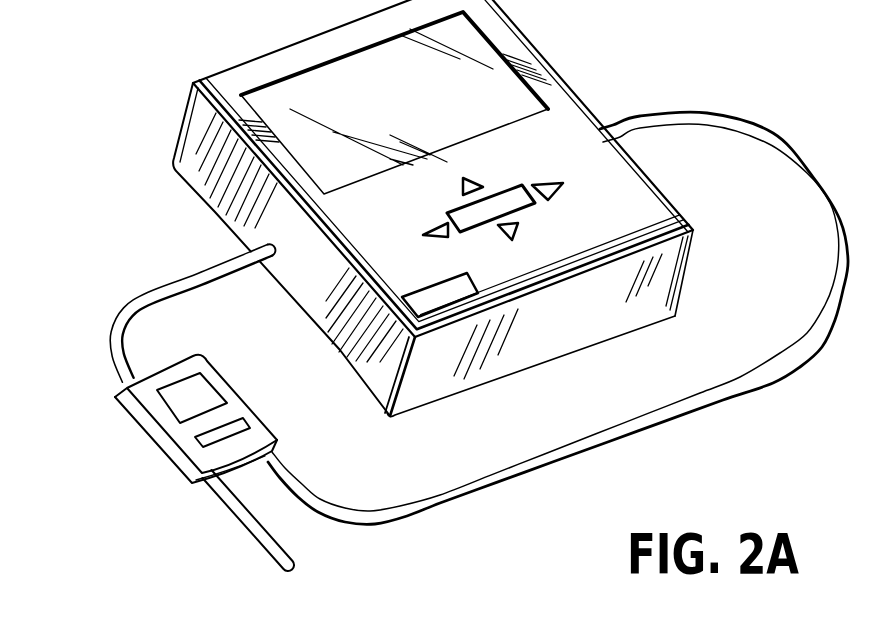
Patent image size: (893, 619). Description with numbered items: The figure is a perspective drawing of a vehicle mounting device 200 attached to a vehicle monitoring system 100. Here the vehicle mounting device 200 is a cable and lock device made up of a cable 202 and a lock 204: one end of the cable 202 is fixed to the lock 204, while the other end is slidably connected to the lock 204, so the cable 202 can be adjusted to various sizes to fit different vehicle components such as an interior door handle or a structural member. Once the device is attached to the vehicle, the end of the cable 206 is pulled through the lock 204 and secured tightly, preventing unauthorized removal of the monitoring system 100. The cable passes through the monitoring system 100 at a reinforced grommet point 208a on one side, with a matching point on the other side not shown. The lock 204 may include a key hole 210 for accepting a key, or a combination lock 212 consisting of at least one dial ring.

The vehicle monitoring system 100 is at (551, 62).
The vehicle mounting device 200 is at (139, 522).
The cable 202 is at (545, 471).
The lock 204 is at (157, 444).
The end of the cable 206 is at (257, 538).
The reinforced grommet point 208a is at (256, 246).
The key hole 210 is at (207, 380).
The combination lock 212 is at (245, 426).